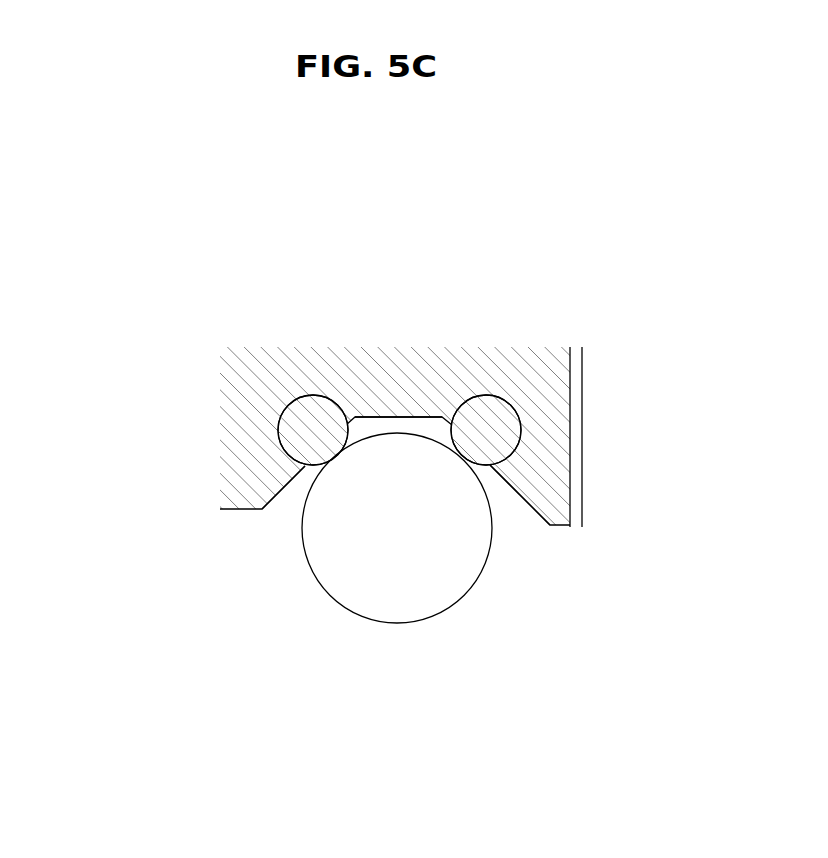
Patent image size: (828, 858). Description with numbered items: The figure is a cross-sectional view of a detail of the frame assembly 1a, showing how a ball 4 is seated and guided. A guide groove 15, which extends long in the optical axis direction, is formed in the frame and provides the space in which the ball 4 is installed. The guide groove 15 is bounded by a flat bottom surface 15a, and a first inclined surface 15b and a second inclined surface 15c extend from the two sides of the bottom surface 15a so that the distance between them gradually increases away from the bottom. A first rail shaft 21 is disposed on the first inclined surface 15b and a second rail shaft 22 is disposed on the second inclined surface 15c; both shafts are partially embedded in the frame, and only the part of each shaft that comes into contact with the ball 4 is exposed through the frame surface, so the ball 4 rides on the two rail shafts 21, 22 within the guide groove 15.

The bearing assembly 1a is at (71, 224).
The ball 4 is at (365, 579).
The guide groove 15 is at (360, 406).
The bottom surface 15a is at (391, 416).
The first inclined surface 15b is at (281, 490).
The second inclined surface 15c is at (527, 502).
The first rail shaft 21 is at (285, 410).
The second rail shaft 22 is at (501, 410).